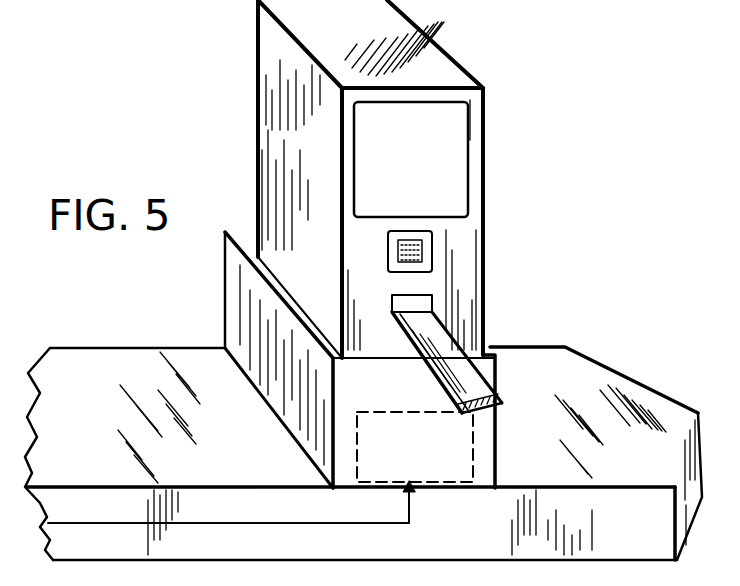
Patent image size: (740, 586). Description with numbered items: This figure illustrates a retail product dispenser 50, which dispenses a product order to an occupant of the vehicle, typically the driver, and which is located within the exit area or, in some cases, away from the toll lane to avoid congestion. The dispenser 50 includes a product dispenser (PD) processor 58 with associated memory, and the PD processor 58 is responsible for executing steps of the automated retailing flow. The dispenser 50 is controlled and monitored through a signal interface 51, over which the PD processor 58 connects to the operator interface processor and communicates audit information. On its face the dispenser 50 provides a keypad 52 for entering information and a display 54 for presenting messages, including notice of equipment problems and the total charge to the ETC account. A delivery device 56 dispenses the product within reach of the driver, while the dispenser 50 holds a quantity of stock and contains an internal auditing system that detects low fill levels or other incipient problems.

The product dispenser 50 is at (441, 36).
The signal interface 51 is at (240, 523).
The keypad 52 is at (432, 249).
The display 54 is at (468, 157).
The delivery device 56 is at (465, 387).
The PD processor 58 is at (453, 483).